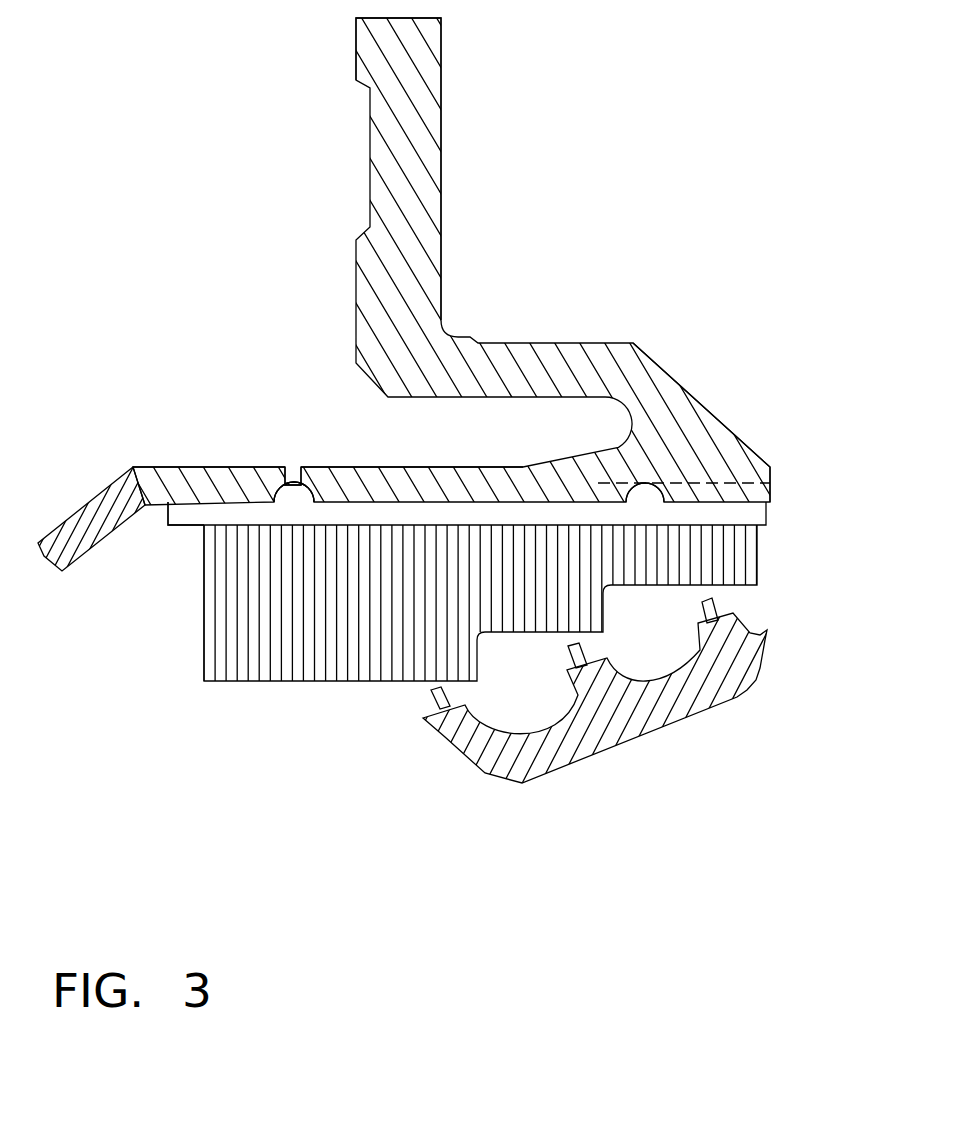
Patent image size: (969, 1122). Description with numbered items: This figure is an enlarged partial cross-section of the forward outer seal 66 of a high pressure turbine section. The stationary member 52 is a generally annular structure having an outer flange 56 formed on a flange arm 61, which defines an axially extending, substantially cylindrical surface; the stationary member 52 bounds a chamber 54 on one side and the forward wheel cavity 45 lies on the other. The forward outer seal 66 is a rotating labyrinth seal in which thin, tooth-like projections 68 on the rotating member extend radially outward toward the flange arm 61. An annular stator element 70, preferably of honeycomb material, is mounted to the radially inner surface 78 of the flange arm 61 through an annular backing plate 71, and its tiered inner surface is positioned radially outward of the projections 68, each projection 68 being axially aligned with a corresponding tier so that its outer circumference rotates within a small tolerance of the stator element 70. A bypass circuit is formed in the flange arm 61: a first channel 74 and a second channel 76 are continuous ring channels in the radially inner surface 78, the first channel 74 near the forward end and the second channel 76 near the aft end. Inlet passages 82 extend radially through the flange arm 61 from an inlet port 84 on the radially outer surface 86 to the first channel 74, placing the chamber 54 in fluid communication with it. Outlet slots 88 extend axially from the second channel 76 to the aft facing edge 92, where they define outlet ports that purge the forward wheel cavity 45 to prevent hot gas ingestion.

The forward wheel cavity 45 is at (817, 372).
The stationary member 52 is at (454, 222).
The chamber 54 is at (212, 192).
The outer flange 56 is at (415, 288).
The flange arm 61 is at (172, 488).
The forward outer seal 66 is at (777, 611).
The tooth-like projections 68 is at (425, 700).
The stator element 70 is at (228, 662).
The backing plate 71 is at (740, 517).
The first channel 74 is at (293, 500).
The second channel 76 is at (647, 497).
The radially inner surface 78 is at (172, 522).
The inlet passages 82 is at (292, 468).
The inlet port 84 is at (300, 468).
The radially outer surface 86 is at (389, 467).
The outlet slots 88 is at (713, 478).
The aft facing edge 92 is at (771, 471).